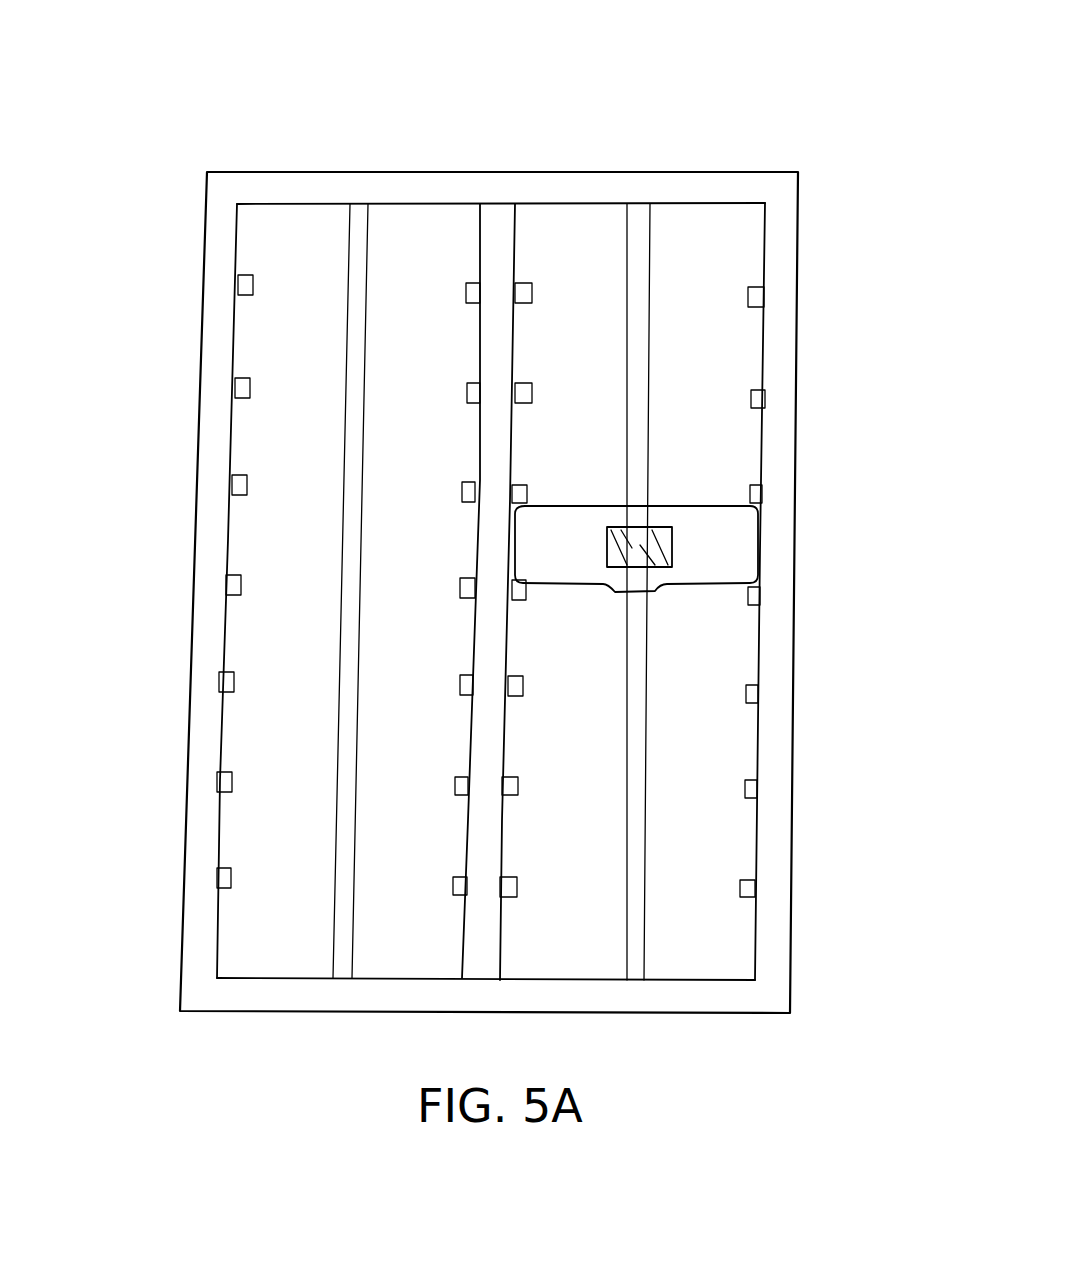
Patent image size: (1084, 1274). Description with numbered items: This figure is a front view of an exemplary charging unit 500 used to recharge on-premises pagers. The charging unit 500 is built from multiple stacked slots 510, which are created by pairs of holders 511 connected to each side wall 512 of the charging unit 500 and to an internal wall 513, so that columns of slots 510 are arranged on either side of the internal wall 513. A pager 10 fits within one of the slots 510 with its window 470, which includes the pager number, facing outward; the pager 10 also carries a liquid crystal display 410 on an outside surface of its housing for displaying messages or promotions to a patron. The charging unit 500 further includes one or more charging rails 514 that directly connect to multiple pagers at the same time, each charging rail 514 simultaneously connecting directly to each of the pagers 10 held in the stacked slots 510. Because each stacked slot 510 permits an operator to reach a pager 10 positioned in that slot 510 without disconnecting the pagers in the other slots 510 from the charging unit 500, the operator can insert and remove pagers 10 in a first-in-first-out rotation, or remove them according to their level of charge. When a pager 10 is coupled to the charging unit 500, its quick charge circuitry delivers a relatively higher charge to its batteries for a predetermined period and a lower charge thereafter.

The charging unit 500 is at (573, 591).
The slots 510 is at (270, 340).
The holders 511 is at (748, 293).
The side wall 512 is at (200, 473).
The internal wall 513 is at (480, 842).
The charging rails 514 is at (338, 947).
The on-premises pager 10 is at (728, 556).
The liquid crystal display (LCD) 410 is at (645, 527).
The window 470 is at (650, 548).